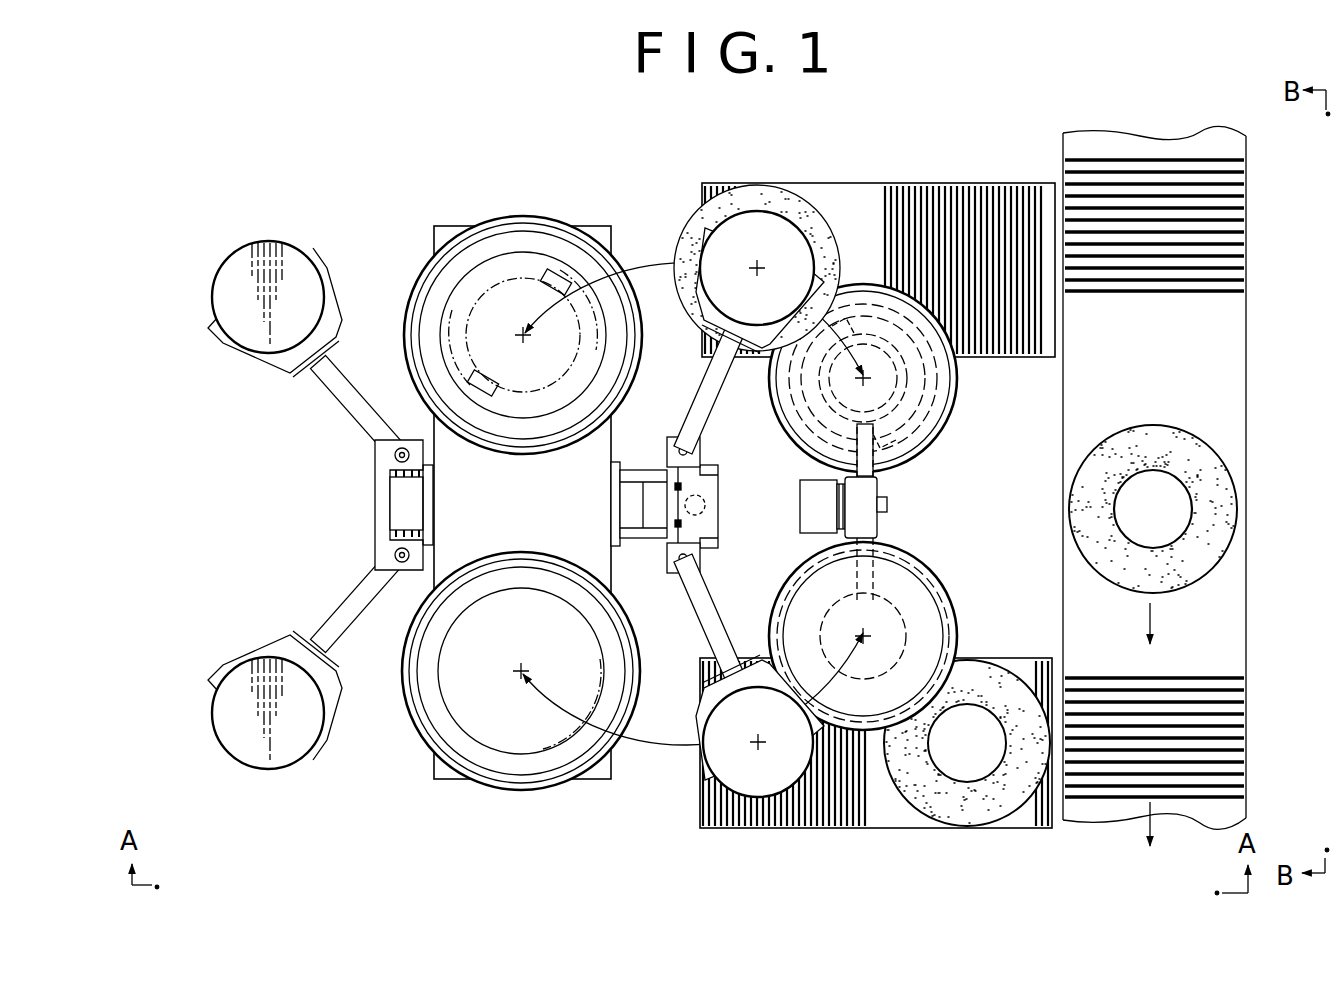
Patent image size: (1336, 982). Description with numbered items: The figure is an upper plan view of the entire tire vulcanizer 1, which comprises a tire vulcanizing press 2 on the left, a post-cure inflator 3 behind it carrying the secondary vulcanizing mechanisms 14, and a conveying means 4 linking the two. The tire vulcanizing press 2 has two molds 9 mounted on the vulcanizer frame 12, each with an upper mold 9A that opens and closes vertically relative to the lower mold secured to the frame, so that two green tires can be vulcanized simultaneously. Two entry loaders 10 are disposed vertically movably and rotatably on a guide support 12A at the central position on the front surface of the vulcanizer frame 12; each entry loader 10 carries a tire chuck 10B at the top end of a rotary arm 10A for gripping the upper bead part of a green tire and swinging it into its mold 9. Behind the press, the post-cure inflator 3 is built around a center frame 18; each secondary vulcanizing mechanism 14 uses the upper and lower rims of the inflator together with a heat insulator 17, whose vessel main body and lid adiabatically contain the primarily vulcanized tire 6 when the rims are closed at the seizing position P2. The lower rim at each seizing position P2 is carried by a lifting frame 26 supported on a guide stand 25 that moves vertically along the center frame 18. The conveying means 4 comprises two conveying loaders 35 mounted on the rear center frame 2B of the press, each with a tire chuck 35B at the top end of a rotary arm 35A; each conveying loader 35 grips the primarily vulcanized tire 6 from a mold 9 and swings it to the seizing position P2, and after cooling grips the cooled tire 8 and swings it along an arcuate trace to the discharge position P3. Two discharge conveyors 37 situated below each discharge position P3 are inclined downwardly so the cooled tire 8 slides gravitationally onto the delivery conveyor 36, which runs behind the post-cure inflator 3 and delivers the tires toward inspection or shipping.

The tire vulcanizer 1 is at (636, 131).
The tire vulcanizing press 2 is at (482, 216).
The mold 9 is at (524, 237).
The upper mold 9A is at (565, 247).
The entry loader 10 is at (272, 368).
The rotary arm 10A is at (352, 388).
The tire chuck 10B is at (305, 244).
The vulcanizer frame 12 is at (540, 517).
The guide support 12A is at (398, 497).
The cylinder unit 2B is at (637, 546).
The rotary arm 35A is at (717, 383).
The conveying loader 35 is at (694, 302).
The tire chuck 35B is at (795, 242).
The primarily vulcanized tire 6 is at (752, 195).
The discharge position P3 is at (776, 253).
The seizing position P2 is at (884, 414).
The secondary vulcanizing mechanism 14 is at (949, 424).
The heat insulator 17 is at (961, 393).
The center frame 18 is at (808, 503).
The guide stand 25 is at (878, 489).
The post-cure inflator 3 is at (906, 507).
The lifting frame 26 is at (897, 559).
The conveying means 4 is at (993, 182).
The discharge conveyor 37 is at (813, 828).
The cooled tire 8 is at (957, 810).
The delivery conveyor 36 is at (1244, 715).